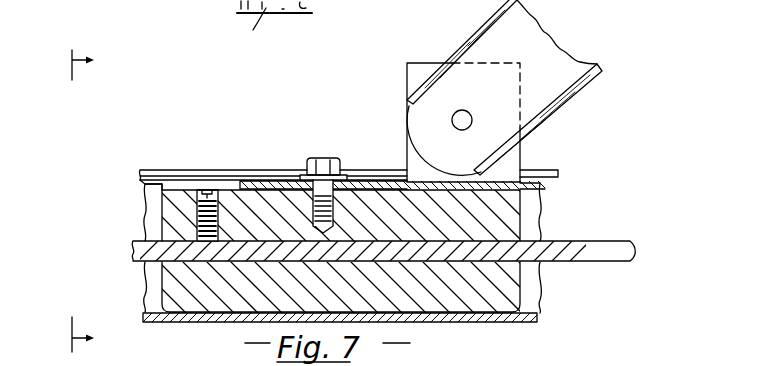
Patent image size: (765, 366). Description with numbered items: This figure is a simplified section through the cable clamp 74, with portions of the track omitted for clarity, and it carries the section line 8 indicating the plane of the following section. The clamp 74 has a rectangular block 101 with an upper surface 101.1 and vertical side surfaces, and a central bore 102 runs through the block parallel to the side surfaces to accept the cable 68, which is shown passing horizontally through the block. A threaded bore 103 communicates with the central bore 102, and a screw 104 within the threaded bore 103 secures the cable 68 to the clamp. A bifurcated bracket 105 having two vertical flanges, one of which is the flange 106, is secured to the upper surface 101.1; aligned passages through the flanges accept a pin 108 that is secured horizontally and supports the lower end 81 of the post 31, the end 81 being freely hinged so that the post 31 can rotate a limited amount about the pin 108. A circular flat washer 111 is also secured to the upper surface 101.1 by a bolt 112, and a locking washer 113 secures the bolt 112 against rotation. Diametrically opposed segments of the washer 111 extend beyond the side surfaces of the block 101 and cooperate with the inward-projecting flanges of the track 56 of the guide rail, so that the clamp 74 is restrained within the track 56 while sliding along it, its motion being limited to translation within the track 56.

The section line 8- 8 is at (68, 201).
The post 31 is at (556, 32).
The track 56 is at (567, 168).
The cable 68 is at (617, 230).
The clamp 74 is at (225, 142).
The lower end of the post 81 is at (440, 62).
The rectangular block 101 is at (172, 285).
The upper surface 101.1 is at (167, 183).
The central bore 102 is at (165, 240).
The threaded bore 103 is at (201, 171).
The screw 104 is at (215, 171).
The bifurcated bracket 105 is at (535, 147).
The vertical flange 106 is at (410, 70).
The pin 108 is at (458, 117).
The circular flat washer 111 is at (292, 150).
The bolt 112 is at (332, 130).
The locking washer 113 is at (348, 177).